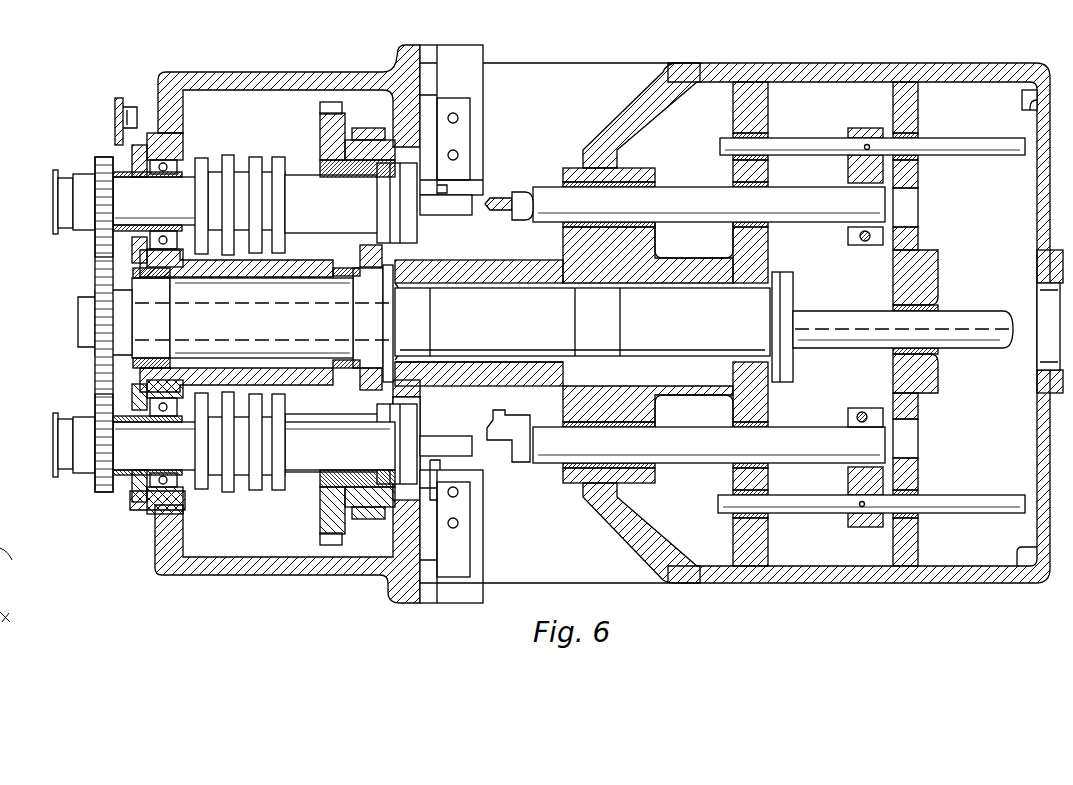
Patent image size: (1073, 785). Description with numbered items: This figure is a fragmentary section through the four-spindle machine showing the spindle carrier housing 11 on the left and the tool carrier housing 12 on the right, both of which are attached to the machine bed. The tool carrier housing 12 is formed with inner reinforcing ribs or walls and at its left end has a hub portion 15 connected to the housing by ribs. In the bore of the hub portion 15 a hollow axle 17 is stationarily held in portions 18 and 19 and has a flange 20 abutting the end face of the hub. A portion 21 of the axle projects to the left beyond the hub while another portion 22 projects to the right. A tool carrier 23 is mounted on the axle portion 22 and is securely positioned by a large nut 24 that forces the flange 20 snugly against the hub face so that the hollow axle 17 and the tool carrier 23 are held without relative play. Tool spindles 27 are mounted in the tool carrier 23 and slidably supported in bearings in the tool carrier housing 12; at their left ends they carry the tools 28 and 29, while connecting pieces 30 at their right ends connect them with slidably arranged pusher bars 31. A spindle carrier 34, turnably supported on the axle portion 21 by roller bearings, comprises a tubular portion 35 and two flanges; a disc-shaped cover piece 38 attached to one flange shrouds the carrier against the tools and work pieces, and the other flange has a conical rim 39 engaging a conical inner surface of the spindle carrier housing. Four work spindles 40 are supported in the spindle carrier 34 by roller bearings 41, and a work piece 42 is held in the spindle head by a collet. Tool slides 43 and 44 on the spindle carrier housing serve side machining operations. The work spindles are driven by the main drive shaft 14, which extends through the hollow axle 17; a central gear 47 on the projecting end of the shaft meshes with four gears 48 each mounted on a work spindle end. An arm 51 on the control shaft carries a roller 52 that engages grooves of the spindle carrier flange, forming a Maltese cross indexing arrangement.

The spindle carrier housing 11 is at (168, 583).
The tool carrier housing 12 is at (630, 130).
The main drive shaft 14 is at (962, 320).
The hub portion 15 is at (530, 385).
The hollow axle 17 is at (468, 301).
The holding portion 18 is at (580, 262).
The holding portion 19 is at (412, 278).
The flange 20 is at (440, 380).
The axle portion 21 is at (424, 318).
The axle portion 22 is at (712, 362).
The tool carrier 23 is at (680, 270).
The large nut 24 is at (797, 300).
The tool spindles 27 is at (802, 214).
The tool 28 is at (497, 195).
The tool 29 is at (500, 442).
The connecting pieces 30 is at (848, 172).
The pusher bars 31 is at (958, 146).
The spindle carrier 34 is at (320, 125).
The tubular portion 35 is at (198, 165).
The disc-shaped cover piece 38 is at (368, 128).
The conical rim 39 is at (165, 516).
The work spindles 40 is at (312, 188).
The roller bearings 41 is at (183, 482).
The work piece 42 is at (452, 212).
The tool slide 43 is at (465, 112).
The tool slide 44 is at (465, 520).
The central gear 47 is at (95, 278).
The gears 48 is at (98, 154).
The arm 51 is at (114, 116).
The roller 52 is at (130, 108).